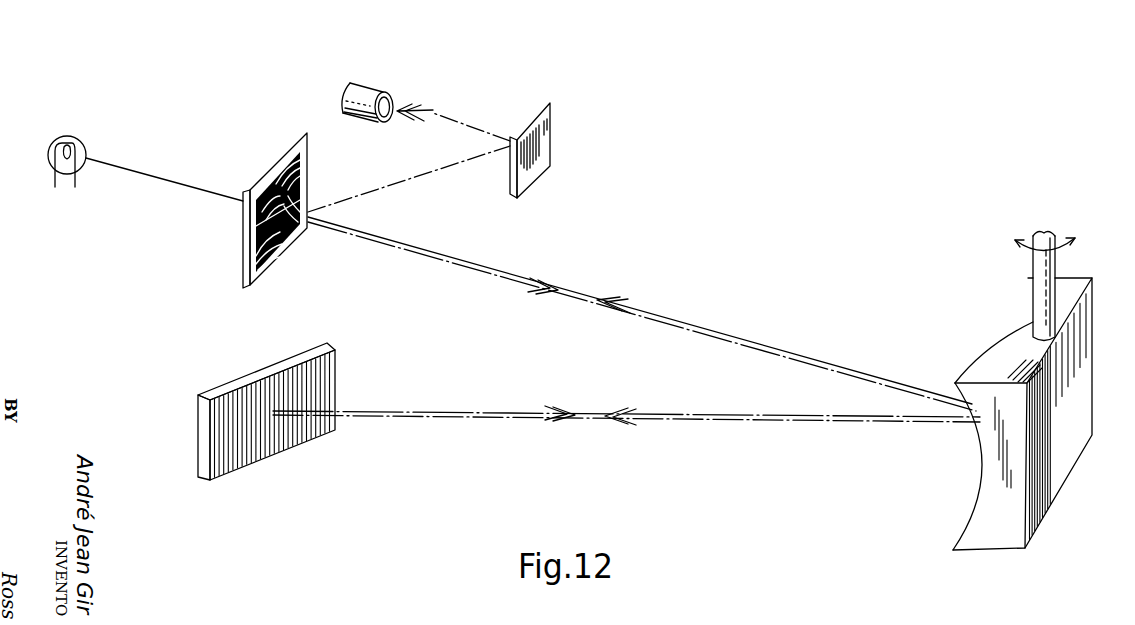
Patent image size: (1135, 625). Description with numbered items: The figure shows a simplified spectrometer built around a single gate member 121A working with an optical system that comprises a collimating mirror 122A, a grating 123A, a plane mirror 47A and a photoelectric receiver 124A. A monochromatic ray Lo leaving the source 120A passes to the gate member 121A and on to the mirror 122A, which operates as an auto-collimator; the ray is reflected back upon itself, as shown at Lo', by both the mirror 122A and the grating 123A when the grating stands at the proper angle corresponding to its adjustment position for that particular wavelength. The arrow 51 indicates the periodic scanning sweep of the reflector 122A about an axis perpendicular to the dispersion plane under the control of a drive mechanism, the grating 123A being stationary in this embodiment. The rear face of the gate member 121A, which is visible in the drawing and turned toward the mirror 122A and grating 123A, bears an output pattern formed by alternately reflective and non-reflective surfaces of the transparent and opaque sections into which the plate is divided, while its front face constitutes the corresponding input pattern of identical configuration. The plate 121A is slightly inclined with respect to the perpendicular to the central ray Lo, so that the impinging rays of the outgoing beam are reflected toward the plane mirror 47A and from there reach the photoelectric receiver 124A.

The source 120A is at (52, 141).
The monochromatic ray Lo is at (164, 168).
The gate member 121A is at (287, 237).
The plane mirror 47A is at (550, 155).
The photoelectric receiver 124A is at (377, 88).
The reflected ray Lo' is at (642, 314).
The grating 123A is at (228, 470).
The collimating mirror 122A is at (1047, 506).
The arrow 51 is at (1062, 249).